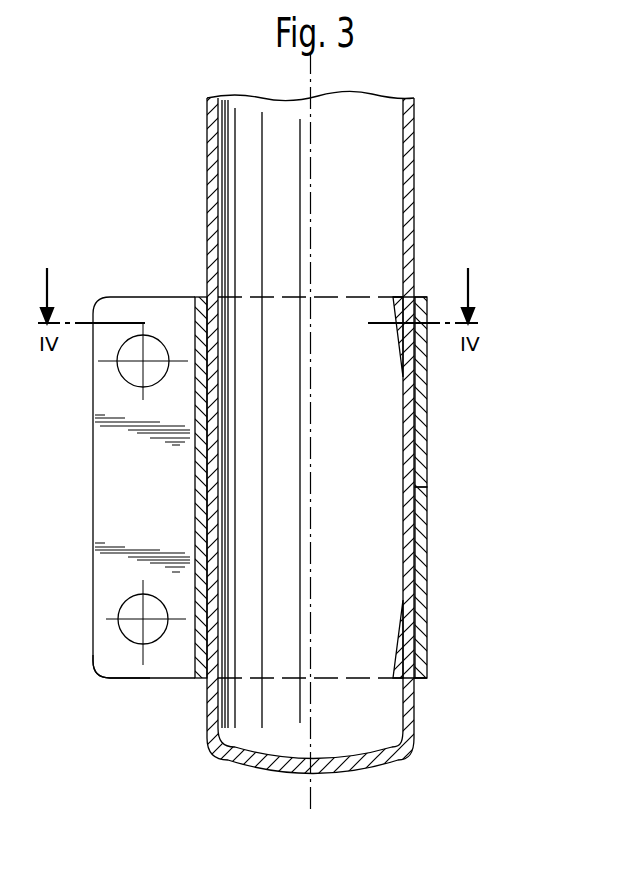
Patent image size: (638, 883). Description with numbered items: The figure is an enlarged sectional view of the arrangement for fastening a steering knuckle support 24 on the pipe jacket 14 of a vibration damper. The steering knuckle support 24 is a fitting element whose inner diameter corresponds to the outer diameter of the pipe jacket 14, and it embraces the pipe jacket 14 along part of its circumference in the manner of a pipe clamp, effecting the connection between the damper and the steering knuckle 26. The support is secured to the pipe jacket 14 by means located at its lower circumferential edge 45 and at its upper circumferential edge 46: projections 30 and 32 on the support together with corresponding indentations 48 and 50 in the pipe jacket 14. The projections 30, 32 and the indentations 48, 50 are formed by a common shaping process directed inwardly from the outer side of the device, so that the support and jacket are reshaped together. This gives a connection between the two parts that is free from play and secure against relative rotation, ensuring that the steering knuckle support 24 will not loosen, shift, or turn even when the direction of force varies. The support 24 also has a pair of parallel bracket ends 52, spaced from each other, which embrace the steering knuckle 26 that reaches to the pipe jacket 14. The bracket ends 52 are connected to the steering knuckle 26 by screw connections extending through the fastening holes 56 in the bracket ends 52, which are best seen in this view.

The pipe jacket 14 is at (207, 166).
The steering knuckle support 24 is at (117, 475).
The steering knuckle 26 is at (199, 656).
The projection 30 is at (414, 661).
The projection 32 is at (427, 301).
The lower circumferential edge 45 is at (422, 679).
The upper circumferential edge 46 is at (419, 294).
The indentation 48 is at (393, 672).
The indentation 50 is at (393, 295).
The bracket end 52 is at (141, 680).
The fastening hole 56 is at (122, 368).